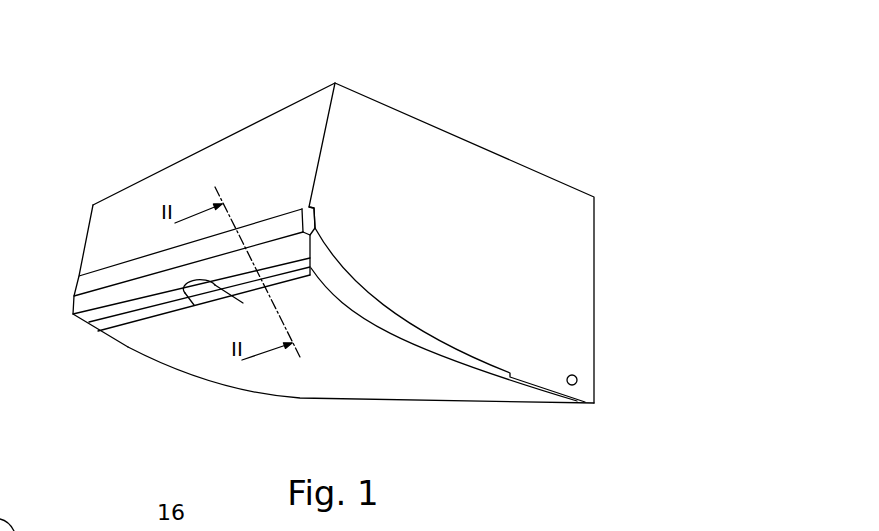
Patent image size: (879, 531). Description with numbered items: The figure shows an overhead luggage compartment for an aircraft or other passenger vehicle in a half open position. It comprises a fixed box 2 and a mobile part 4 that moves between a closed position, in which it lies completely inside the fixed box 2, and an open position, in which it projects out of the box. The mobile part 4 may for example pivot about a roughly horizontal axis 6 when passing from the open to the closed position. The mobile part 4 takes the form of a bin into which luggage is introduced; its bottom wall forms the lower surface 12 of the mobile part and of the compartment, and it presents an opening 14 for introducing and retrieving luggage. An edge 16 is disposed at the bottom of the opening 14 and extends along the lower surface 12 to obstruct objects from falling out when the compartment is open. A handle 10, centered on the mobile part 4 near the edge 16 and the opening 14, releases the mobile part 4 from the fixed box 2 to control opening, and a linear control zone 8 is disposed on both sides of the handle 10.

The fixed box 2 is at (478, 170).
The mobile part 4 is at (350, 382).
The axis 6 is at (578, 383).
The linear control zone 8 is at (290, 280).
The handle 10 is at (197, 287).
The lower surface 12 is at (437, 385).
The opening 14 is at (280, 225).
The edge 16 is at (289, 246).